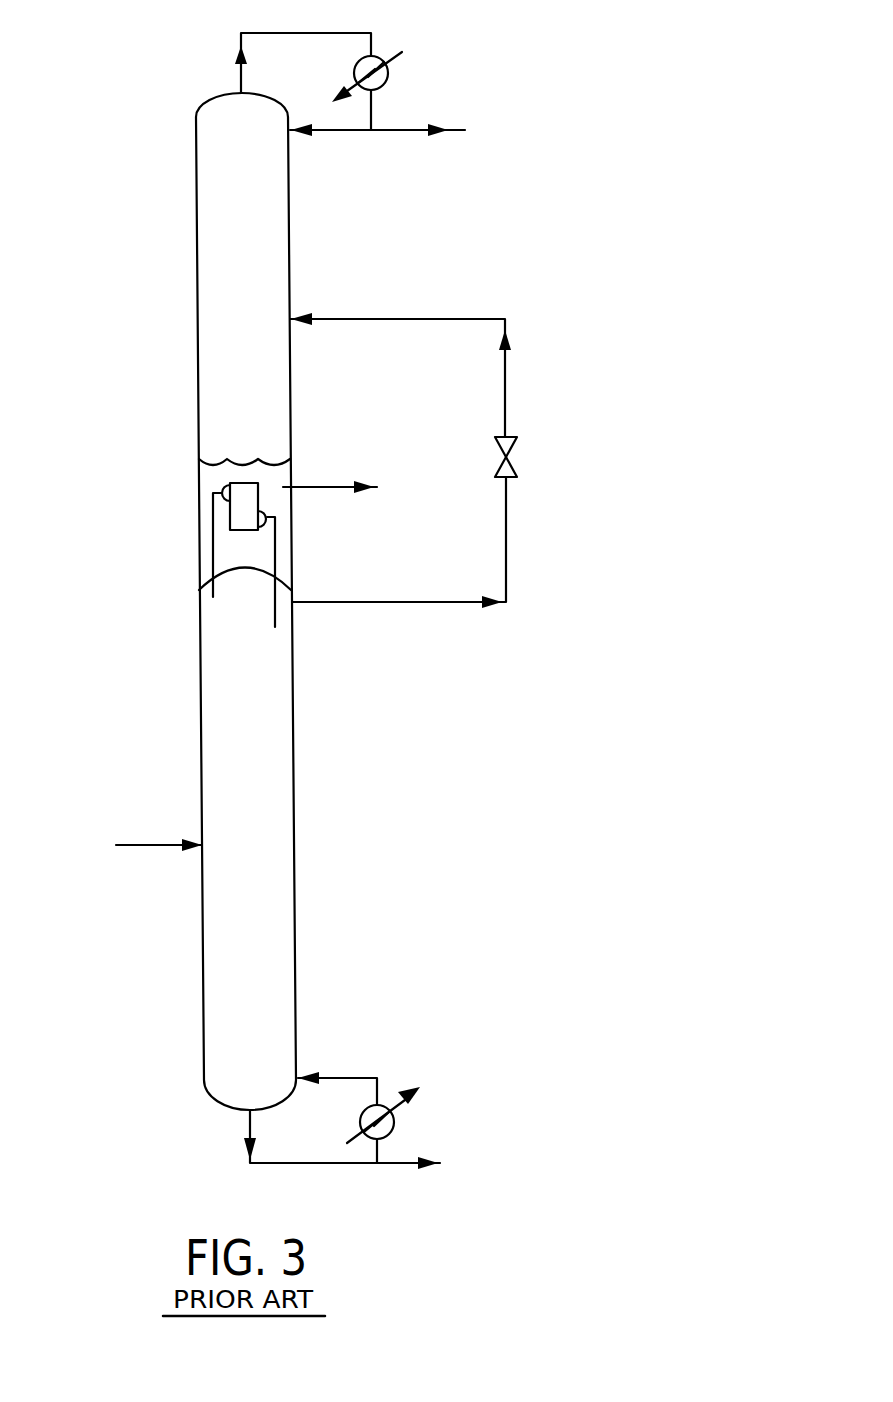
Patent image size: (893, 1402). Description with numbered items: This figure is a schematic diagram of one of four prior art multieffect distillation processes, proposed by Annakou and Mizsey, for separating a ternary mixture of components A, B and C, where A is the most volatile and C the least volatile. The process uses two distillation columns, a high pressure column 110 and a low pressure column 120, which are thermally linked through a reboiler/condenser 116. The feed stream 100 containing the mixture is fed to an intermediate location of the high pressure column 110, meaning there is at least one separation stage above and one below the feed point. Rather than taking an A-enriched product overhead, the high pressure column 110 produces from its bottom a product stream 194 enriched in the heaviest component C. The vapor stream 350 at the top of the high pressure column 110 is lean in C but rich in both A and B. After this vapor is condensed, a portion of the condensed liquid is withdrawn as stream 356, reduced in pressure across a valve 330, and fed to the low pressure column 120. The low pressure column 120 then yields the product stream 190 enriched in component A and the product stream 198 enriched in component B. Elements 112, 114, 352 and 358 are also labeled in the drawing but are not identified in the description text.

The feed stream 100 is at (143, 848).
The high pressure column 110 is at (296, 937).
The reboiler 112 is at (388, 1100).
The condenser 114 is at (373, 56).
The reboiler/condenser 116 is at (245, 483).
The low pressure column 120 is at (196, 205).
The A-enriched product stream 190 is at (399, 132).
The C-enriched product stream 194 is at (393, 1165).
The B-enriched product stream 198 is at (320, 488).
The valve 330 is at (519, 468).
The vapor stream 350 is at (214, 586).
The draw-off sump 352 is at (278, 553).
The withdrawn condensed stream 356 is at (385, 604).
The liquid return line AB 358 is at (462, 318).